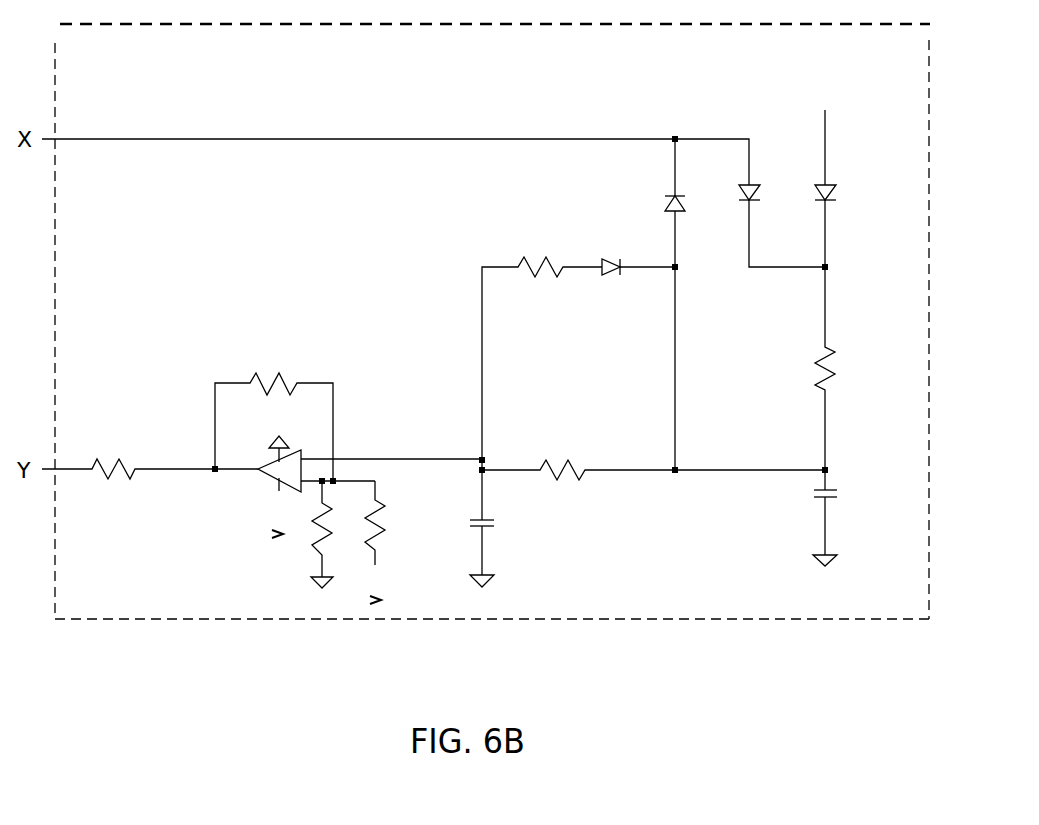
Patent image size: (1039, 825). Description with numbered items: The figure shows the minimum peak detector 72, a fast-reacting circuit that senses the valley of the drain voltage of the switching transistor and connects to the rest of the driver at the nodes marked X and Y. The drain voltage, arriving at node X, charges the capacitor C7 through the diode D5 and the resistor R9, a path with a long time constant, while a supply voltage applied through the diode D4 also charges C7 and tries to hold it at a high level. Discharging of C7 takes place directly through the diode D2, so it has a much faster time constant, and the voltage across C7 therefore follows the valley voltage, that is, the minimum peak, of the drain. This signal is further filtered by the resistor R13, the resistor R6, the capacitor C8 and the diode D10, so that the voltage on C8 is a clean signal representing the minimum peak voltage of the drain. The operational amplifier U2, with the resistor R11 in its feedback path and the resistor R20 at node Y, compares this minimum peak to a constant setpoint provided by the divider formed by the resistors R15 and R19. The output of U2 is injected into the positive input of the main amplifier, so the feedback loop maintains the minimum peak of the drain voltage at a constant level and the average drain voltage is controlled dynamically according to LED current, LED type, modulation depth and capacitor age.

The minimum peak detector 72 is at (690, 620).
The resistor R20 is at (150, 488).
The resistor R11 is at (274, 414).
The operational amplifier U2 is at (360, 487).
The divider resistor R19 is at (344, 534).
The divider resistor R15 is at (396, 542).
The capacitor C8 is at (492, 522).
The resistor R13 is at (653, 457).
The resistor R6 is at (542, 352).
The diode D10 is at (634, 251).
The diode D2 is at (663, 306).
The diode D5 is at (782, 212).
The diode D4 is at (832, 177).
The resistor R9 is at (807, 370).
The capacitor C7 is at (808, 518).